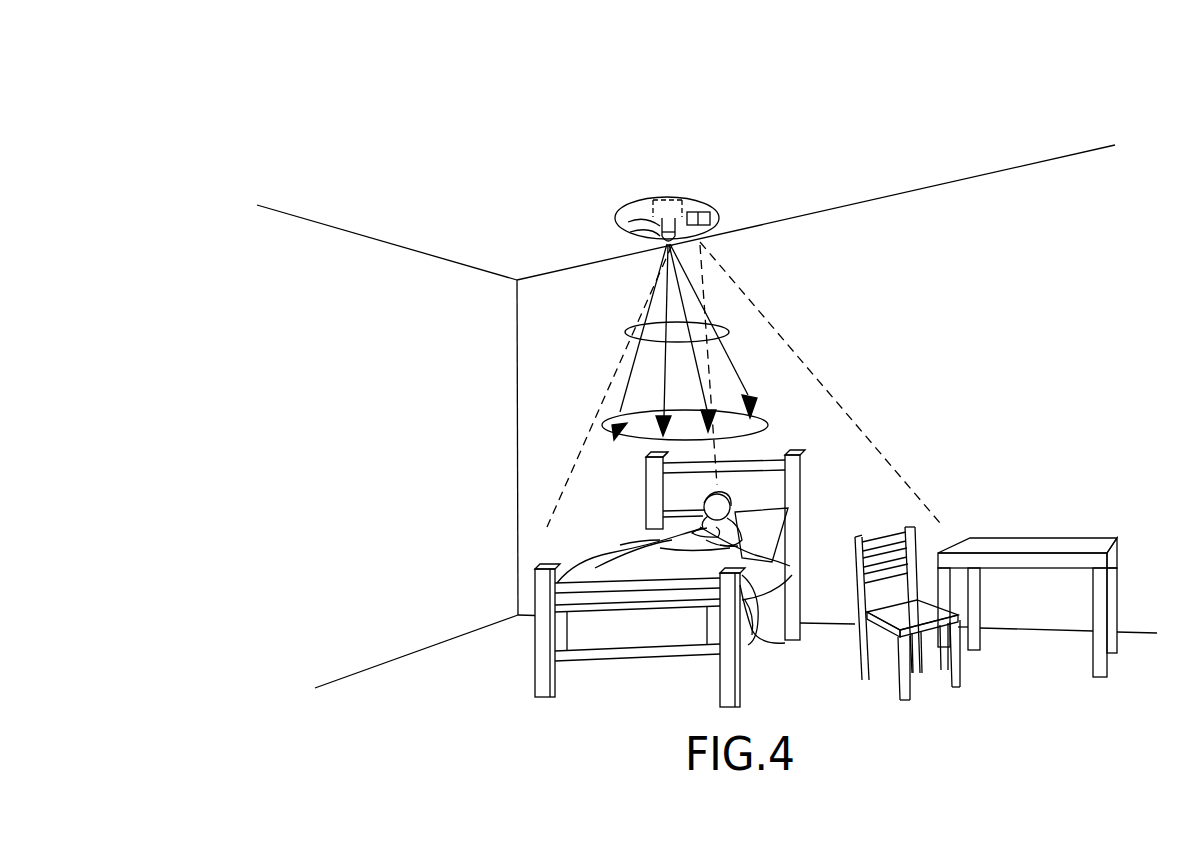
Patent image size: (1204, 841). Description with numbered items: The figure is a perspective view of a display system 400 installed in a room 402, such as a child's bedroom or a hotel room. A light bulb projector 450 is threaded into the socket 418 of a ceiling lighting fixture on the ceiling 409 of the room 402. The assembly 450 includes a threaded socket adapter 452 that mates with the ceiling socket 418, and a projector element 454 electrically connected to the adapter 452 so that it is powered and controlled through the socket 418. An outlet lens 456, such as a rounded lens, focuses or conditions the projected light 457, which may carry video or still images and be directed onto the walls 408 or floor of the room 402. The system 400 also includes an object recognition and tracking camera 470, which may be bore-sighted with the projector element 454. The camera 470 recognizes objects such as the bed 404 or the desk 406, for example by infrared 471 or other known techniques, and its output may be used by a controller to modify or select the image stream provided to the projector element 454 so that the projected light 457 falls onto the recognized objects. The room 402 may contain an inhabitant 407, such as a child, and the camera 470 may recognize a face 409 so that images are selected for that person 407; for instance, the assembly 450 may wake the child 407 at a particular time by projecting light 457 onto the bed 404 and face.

The display system 400 is at (838, 96).
The room 402 is at (478, 578).
The bed 404 is at (760, 648).
The desk 406 is at (1003, 536).
The inhabitant 407 is at (648, 530).
The walls 408 is at (403, 457).
The ceiling 409 is at (733, 513).
The socket 418 is at (690, 190).
The light bulb projector 450 is at (660, 233).
The socket adapter 452 is at (643, 213).
The projector element 454 is at (653, 220).
The outlet lens 456 is at (655, 246).
The projected light 457 is at (729, 331).
The camera 470 is at (712, 215).
The infrared 471 is at (770, 423).